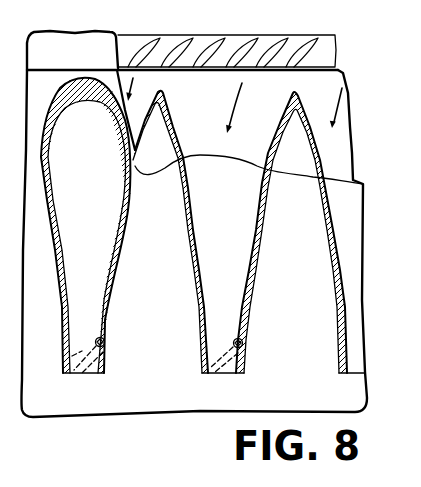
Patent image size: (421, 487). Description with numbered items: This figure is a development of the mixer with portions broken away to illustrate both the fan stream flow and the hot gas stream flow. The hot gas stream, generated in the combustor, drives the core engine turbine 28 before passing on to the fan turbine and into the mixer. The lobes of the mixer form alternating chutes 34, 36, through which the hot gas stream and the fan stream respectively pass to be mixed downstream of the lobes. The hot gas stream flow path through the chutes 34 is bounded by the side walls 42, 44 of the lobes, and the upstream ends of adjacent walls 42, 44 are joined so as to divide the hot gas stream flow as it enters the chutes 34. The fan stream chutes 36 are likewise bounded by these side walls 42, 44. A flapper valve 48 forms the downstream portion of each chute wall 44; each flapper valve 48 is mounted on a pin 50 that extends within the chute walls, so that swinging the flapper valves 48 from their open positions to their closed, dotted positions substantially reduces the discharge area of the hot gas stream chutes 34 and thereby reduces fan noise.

The core engine turbine 28 is at (346, 40).
The hot gas stream chute 34 is at (92, 195).
The fan stream chute 36 is at (160, 258).
The side wall 42 is at (156, 97).
The side wall 44 is at (178, 133).
The flapper valve 48 is at (107, 361).
The pin 50 is at (106, 341).